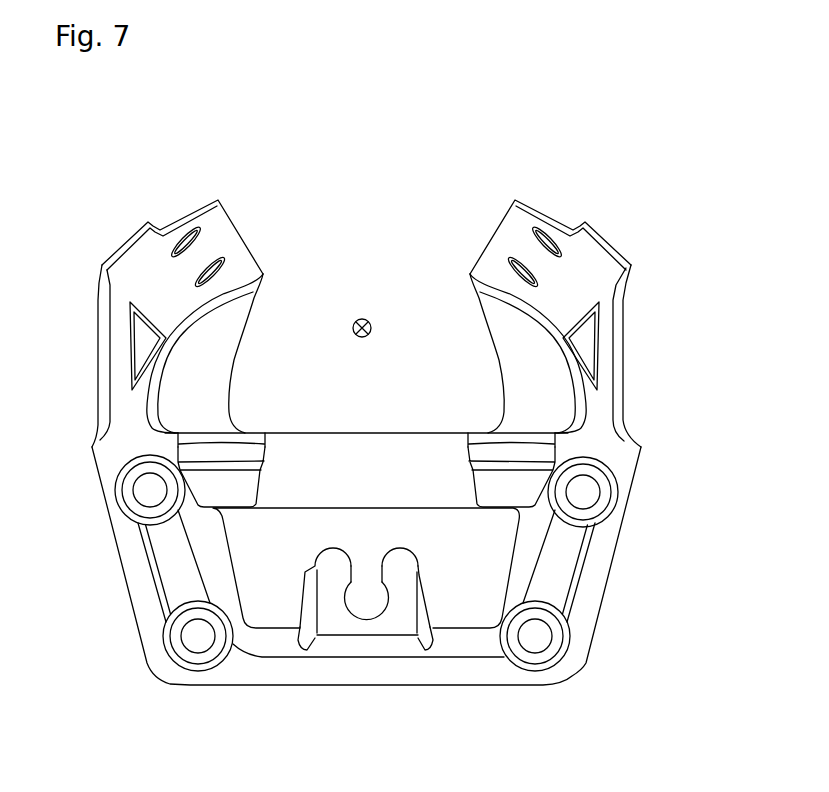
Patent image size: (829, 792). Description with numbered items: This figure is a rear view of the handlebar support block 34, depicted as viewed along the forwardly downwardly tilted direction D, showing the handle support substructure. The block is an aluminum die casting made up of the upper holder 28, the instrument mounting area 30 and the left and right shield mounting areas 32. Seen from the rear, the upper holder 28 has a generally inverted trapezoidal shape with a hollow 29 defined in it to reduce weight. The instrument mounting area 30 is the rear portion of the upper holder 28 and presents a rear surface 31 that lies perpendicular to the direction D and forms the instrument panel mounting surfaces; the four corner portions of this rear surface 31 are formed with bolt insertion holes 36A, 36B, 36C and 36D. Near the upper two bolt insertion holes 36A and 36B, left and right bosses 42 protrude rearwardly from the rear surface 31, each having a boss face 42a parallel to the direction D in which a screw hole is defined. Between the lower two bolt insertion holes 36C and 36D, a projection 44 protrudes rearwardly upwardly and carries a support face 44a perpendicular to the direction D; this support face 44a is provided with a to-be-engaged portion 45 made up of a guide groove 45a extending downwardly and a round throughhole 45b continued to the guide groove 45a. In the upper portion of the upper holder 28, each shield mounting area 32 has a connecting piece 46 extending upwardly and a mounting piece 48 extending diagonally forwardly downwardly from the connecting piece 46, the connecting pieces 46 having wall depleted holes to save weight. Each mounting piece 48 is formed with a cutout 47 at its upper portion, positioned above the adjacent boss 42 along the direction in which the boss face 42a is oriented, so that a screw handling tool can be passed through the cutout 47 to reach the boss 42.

The upper holder 28 is at (134, 583).
The hollow 29 is at (452, 625).
The instrument mounting area 30 is at (272, 670).
The rear surface 31 is at (560, 583).
The shield mounting area 32 is at (264, 275).
The handlebar support block 34 is at (377, 452).
The bolt insertion hole 36A is at (137, 482).
The bolt insertion hole 36B is at (594, 481).
The bolt insertion hole 36C is at (187, 645).
The bolt insertion hole 36D is at (528, 652).
The boss 42 is at (366, 430).
The boss face 42a is at (253, 447).
The projection 44 is at (365, 643).
The support face 44a is at (395, 620).
The to-be-engaged portion 45 is at (357, 528).
The guide groove 45a is at (350, 560).
The round throughhole 45b is at (352, 597).
The connecting piece 46 is at (603, 410).
The cutout 47 is at (187, 213).
The mounting piece 48 is at (150, 257).
The forwardly downward direction D is at (371, 323).